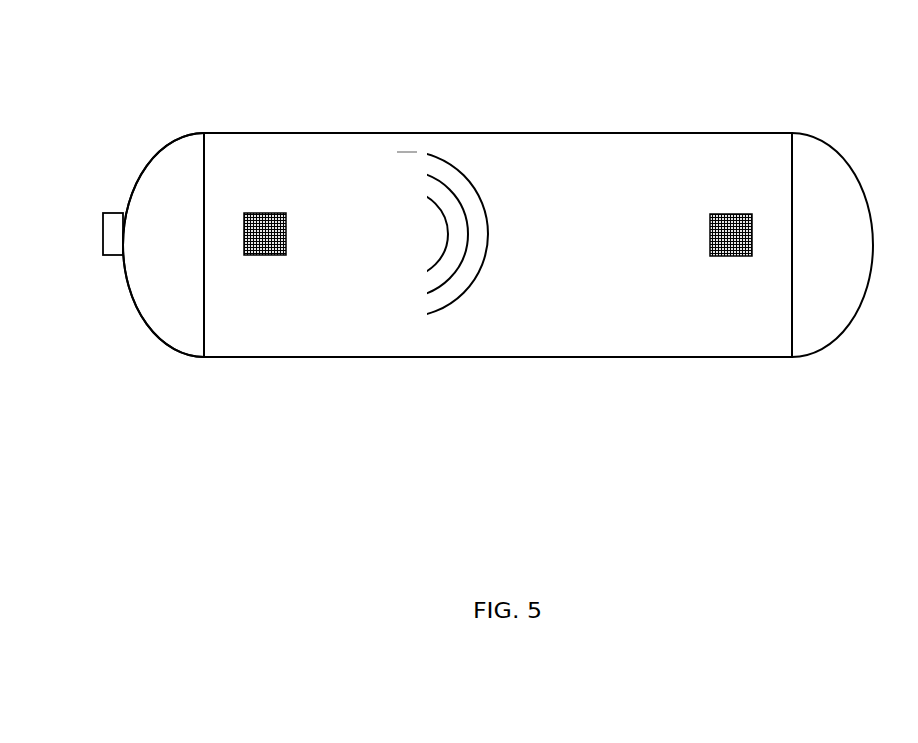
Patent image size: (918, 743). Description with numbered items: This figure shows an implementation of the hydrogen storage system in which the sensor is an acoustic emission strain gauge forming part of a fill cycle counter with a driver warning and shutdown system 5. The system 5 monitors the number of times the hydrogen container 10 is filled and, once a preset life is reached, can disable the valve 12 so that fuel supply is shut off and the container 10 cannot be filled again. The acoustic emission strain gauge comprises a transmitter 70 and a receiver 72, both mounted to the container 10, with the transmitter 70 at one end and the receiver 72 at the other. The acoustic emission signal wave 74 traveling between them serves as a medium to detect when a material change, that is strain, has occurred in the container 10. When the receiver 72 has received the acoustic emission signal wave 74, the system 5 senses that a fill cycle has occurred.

The driver warning and shutdown system 5 is at (163, 182).
The hydrogen container 10 is at (407, 355).
The valve 12 is at (102, 256).
The transmitter 70 is at (263, 235).
The receiver 72 is at (730, 222).
The acoustic emission signal wave 74 is at (467, 215).